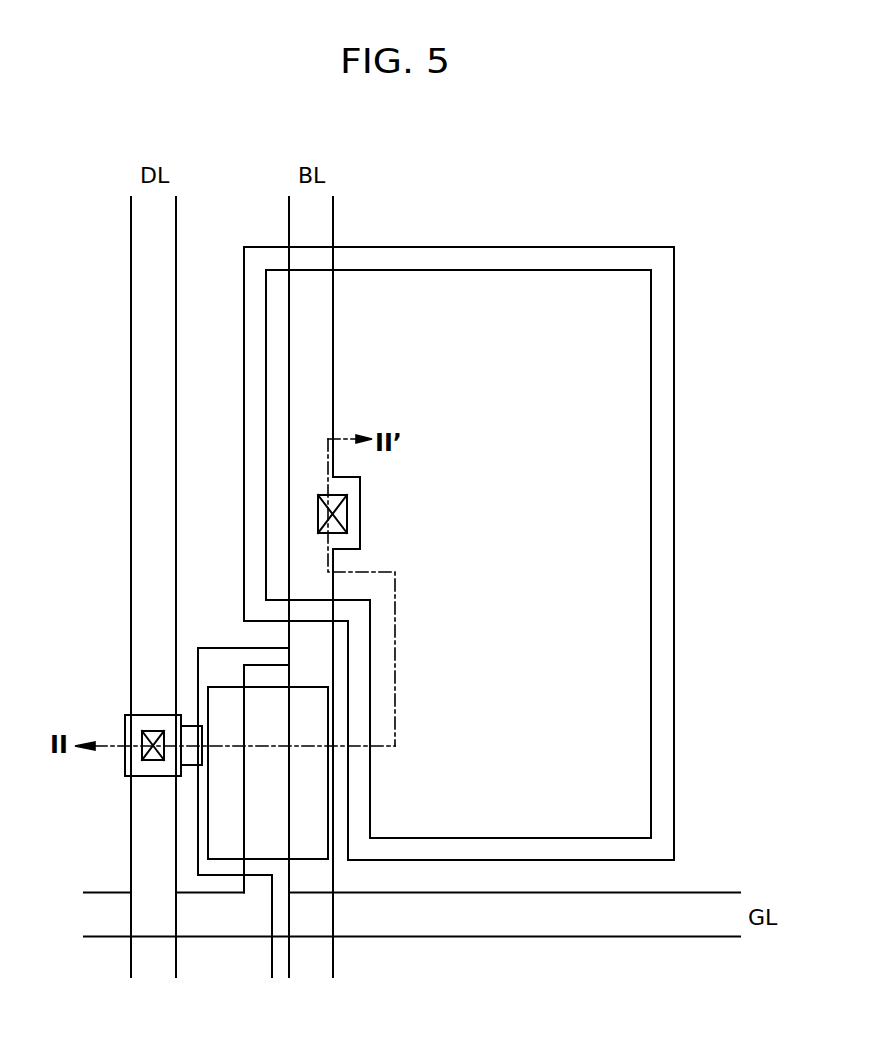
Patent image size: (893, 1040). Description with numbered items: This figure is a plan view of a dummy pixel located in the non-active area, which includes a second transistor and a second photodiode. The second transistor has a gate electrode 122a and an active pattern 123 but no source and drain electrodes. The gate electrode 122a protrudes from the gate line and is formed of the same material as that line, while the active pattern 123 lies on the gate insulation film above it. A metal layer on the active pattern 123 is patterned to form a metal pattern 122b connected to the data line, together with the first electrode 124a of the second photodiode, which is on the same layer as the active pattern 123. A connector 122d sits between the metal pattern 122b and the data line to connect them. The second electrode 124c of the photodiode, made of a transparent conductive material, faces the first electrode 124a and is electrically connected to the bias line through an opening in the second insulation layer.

The gate electrode 122a is at (265, 677).
The metal pattern 122b is at (190, 766).
The connector 122d is at (125, 765).
The active pattern 123 is at (222, 843).
The first electrode 124a is at (494, 848).
The second electrode 124c is at (613, 815).